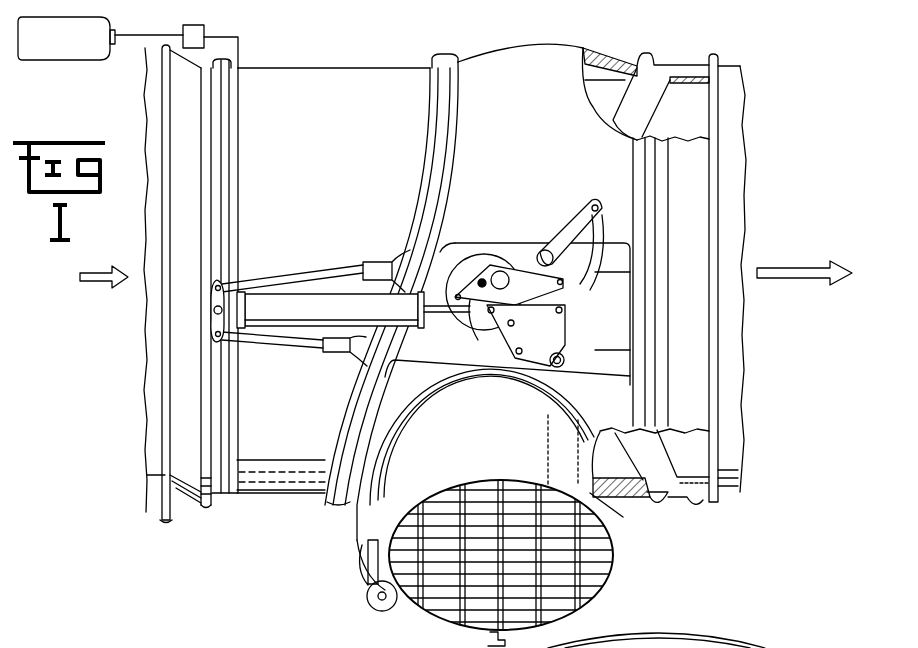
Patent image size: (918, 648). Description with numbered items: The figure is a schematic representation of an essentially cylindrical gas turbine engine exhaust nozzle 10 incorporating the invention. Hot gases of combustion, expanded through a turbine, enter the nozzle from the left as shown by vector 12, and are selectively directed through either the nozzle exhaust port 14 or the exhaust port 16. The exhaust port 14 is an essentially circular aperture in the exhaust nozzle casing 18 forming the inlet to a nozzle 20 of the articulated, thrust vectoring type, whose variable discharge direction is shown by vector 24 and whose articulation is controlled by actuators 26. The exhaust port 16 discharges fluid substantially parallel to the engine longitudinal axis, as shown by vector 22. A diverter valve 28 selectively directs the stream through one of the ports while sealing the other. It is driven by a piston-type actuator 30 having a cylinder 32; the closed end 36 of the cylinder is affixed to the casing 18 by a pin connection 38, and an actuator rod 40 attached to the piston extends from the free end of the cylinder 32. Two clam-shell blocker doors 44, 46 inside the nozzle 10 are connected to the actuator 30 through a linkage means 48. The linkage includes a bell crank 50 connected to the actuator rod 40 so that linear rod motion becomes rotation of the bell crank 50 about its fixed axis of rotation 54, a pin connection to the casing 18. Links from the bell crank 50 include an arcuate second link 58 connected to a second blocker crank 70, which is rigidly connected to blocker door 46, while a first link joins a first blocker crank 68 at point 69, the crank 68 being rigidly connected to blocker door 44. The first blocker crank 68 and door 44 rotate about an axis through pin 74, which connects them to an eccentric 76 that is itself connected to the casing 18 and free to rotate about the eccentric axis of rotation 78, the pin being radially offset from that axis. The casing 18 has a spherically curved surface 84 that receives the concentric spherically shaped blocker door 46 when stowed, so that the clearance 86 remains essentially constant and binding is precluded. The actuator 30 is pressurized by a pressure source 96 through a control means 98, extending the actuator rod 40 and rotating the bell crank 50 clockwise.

The gas turbine engine exhaust nozzle 10 is at (598, 44).
The vector 12 is at (100, 270).
The nozzle exhaust port 14 is at (628, 500).
The exhaust port 16 is at (745, 215).
The exhaust nozzle casing 18 is at (355, 68).
The nozzle 20 is at (610, 587).
The vector 22 is at (780, 263).
The vector 24 is at (490, 638).
The actuators 26 is at (360, 584).
The diverter valve 28 is at (442, 348).
The actuator 30 is at (318, 266).
The cylinder 32 is at (322, 317).
The closed end 36 is at (230, 308).
The pin connection 38 is at (230, 316).
The actuator rod 40 is at (435, 338).
The blocker door 44 is at (613, 463).
The blocker door 46 is at (610, 87).
The linkage means 48 is at (512, 233).
The bell crank 50 is at (562, 341).
The axis of rotation 54 is at (567, 360).
The second link 58 is at (588, 292).
The first blocker crank 68 is at (472, 298).
The point 69 is at (455, 283).
The second blocker crank 70 is at (568, 232).
The pin 74 is at (505, 287).
The eccentric 76 is at (490, 255).
The eccentric axis of rotation 78 is at (483, 280).
The spherically curved surface 84 is at (762, 647).
The clearance 86 is at (703, 632).
The pressure source 96 is at (66, 45).
The control means 98 is at (205, 33).